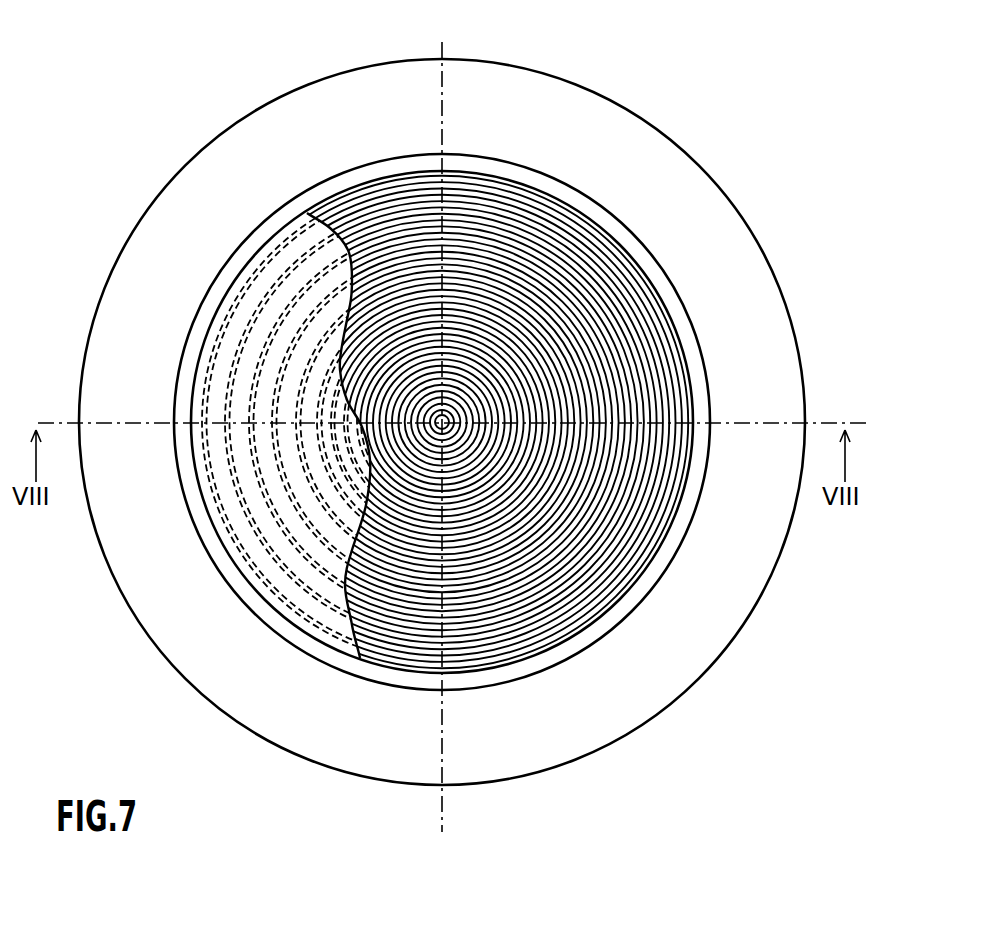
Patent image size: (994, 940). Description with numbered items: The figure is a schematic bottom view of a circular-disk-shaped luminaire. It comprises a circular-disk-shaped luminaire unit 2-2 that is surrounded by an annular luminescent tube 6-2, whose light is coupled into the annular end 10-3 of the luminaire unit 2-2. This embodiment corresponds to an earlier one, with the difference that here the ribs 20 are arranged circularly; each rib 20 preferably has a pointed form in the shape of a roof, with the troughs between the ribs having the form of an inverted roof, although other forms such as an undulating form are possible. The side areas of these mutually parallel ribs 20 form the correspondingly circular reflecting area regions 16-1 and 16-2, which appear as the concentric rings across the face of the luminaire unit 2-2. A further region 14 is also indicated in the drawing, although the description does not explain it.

The luminaire unit 2-2 is at (525, 413).
The annular luminescent tube 6-2 is at (707, 197).
The annular end 10-3 is at (678, 286).
The shaded lens region 14 is at (287, 262).
The reflecting area region 16-1 is at (650, 552).
The reflecting area region 16-2 is at (627, 569).
The ribs 20 is at (525, 462).